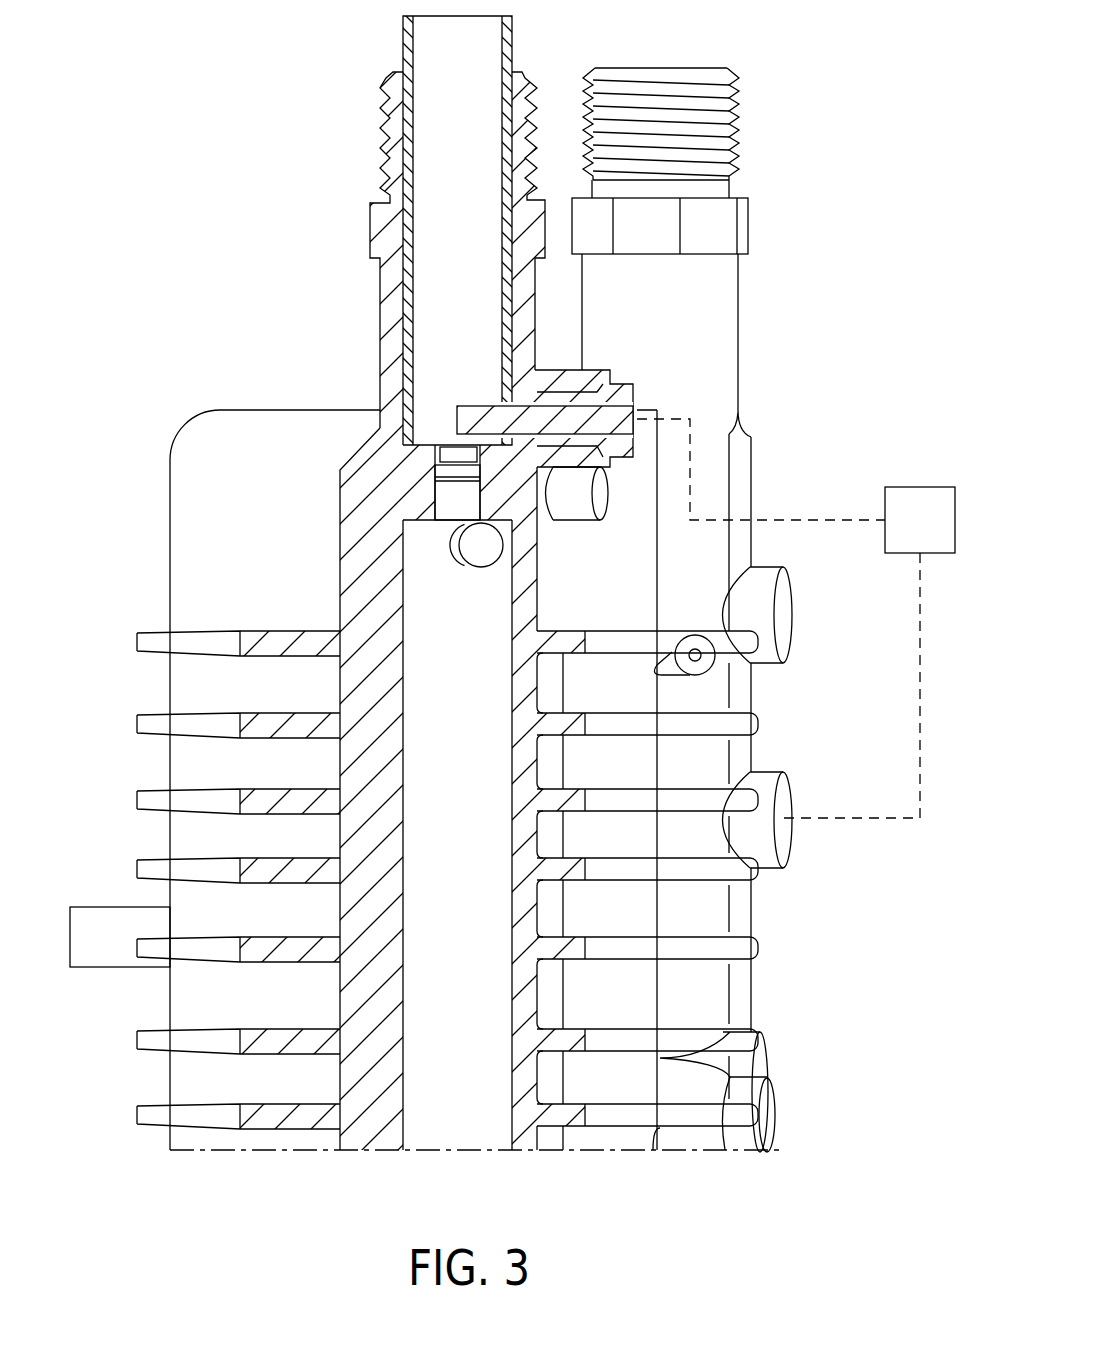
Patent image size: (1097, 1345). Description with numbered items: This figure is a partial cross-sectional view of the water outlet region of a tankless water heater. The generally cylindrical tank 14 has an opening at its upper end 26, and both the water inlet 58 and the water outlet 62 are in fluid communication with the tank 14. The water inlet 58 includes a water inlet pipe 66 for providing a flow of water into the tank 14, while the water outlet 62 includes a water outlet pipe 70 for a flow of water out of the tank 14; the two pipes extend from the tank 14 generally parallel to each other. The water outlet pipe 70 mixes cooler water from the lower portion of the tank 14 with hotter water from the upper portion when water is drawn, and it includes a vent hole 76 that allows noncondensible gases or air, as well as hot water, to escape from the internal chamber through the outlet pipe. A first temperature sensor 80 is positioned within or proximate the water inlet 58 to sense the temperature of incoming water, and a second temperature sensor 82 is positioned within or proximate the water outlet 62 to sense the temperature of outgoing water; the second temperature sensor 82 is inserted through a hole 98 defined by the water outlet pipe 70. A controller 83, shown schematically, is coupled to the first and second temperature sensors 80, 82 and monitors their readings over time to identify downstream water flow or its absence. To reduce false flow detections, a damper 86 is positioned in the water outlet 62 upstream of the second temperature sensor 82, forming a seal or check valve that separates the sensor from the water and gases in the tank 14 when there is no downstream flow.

The tank 14 is at (243, 995).
The upper end 26 is at (187, 497).
The water inlet 58 is at (698, 67).
The water outlet 62 is at (513, 72).
The water inlet pipe 66 is at (720, 307).
The water outlet pipe 70 is at (377, 222).
The vent hole 76 is at (495, 560).
The first temperature sensor 80 is at (792, 826).
The second temperature sensor 82 is at (512, 415).
The controller 83 is at (905, 487).
The damper 86 is at (463, 484).
The hole 98 is at (513, 436).